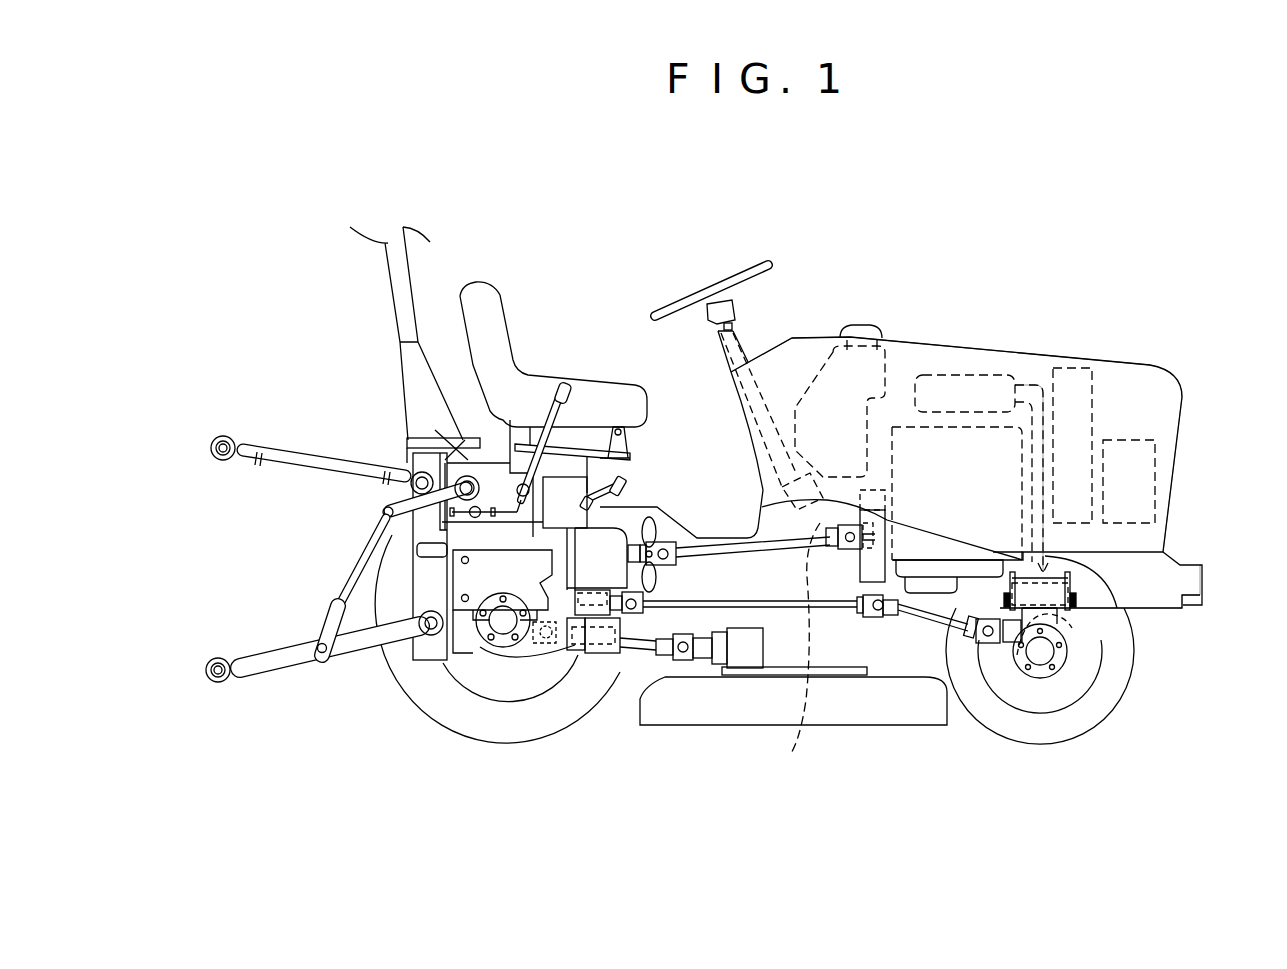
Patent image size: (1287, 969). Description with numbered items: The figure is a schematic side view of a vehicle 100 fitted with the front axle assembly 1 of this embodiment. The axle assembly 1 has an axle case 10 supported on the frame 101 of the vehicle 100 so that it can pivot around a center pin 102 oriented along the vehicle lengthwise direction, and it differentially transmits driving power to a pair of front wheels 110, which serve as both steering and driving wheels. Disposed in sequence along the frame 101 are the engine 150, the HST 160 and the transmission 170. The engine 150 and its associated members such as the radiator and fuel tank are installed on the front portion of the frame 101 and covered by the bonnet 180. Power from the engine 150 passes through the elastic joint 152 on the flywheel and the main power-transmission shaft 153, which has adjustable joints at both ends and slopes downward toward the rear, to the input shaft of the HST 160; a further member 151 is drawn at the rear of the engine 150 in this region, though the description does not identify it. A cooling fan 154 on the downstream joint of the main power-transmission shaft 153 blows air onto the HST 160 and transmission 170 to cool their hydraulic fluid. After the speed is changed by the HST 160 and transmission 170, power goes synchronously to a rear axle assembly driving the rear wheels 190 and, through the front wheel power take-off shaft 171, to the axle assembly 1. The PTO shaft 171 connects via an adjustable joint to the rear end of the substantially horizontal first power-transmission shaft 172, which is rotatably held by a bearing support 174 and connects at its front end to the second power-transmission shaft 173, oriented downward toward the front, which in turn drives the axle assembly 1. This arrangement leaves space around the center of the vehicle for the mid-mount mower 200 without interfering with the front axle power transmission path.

The axle assembly 1 is at (1086, 657).
The axle case 10 is at (1050, 618).
The vehicle 100 is at (1029, 273).
The frame 101 is at (1165, 560).
The center pin 102 is at (1068, 583).
The front wheels 110 is at (1052, 727).
The engine 150 is at (903, 437).
The clutch housing 151 is at (867, 572).
The elastic joint 152 is at (791, 653).
The main power-transmission shaft 153 is at (720, 548).
The cooling fan 154 is at (655, 528).
The HST (hydrostatic transmission) 160 is at (608, 542).
The transmission 170 is at (555, 595).
The power take-off shaft for front wheels 171 is at (600, 625).
The first power-transmission shaft 172 is at (663, 615).
The second power-transmission shaft 173 is at (958, 618).
The bearing support 174 is at (860, 616).
The bonnet 180 is at (1112, 367).
The rear wheels 190 is at (452, 713).
The mid-mount mower 200 is at (750, 708).